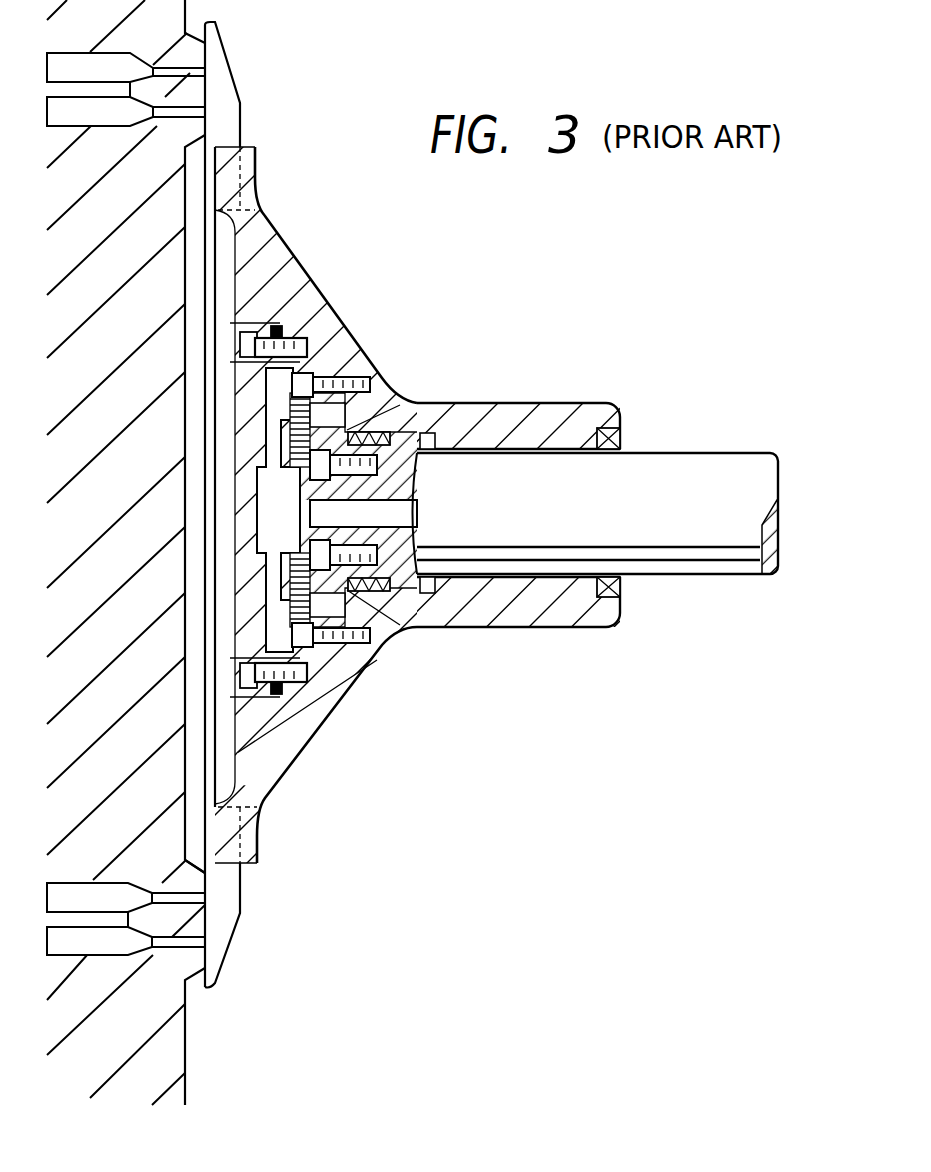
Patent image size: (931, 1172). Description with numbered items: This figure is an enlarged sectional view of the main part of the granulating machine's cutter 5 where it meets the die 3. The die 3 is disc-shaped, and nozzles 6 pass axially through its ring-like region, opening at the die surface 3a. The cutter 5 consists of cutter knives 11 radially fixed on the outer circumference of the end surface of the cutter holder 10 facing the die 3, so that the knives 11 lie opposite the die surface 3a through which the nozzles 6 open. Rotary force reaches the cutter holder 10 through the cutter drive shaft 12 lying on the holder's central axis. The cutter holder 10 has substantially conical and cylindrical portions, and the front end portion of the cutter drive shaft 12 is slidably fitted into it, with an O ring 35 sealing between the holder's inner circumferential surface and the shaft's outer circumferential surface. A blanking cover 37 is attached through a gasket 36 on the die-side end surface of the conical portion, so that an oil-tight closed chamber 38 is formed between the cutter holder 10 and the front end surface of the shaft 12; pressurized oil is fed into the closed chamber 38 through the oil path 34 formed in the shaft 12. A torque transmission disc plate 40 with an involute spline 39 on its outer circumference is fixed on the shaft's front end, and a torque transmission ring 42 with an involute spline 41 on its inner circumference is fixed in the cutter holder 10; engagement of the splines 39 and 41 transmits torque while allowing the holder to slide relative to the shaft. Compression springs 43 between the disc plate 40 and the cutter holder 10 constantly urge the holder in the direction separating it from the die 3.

The die 3 is at (188, 1025).
The die surface 3a is at (207, 886).
The cutter 5 is at (471, 327).
The nozzles 6 is at (102, 72).
The cutter holder 10 is at (566, 403).
The cutter knives 11 is at (233, 82).
The cutter drive shaft 12 is at (664, 452).
The oil path 34 is at (403, 518).
The O ring 35 is at (428, 622).
The gasket 36 is at (281, 690).
The blanking cover 37 is at (240, 333).
The closed chamber 38 is at (240, 477).
The involute spline 39 is at (347, 608).
The torque transmission disc plate 40 is at (428, 483).
The involute spline 41 is at (327, 380).
The torque transmission ring 42 is at (323, 373).
The compression springs 43 is at (400, 418).